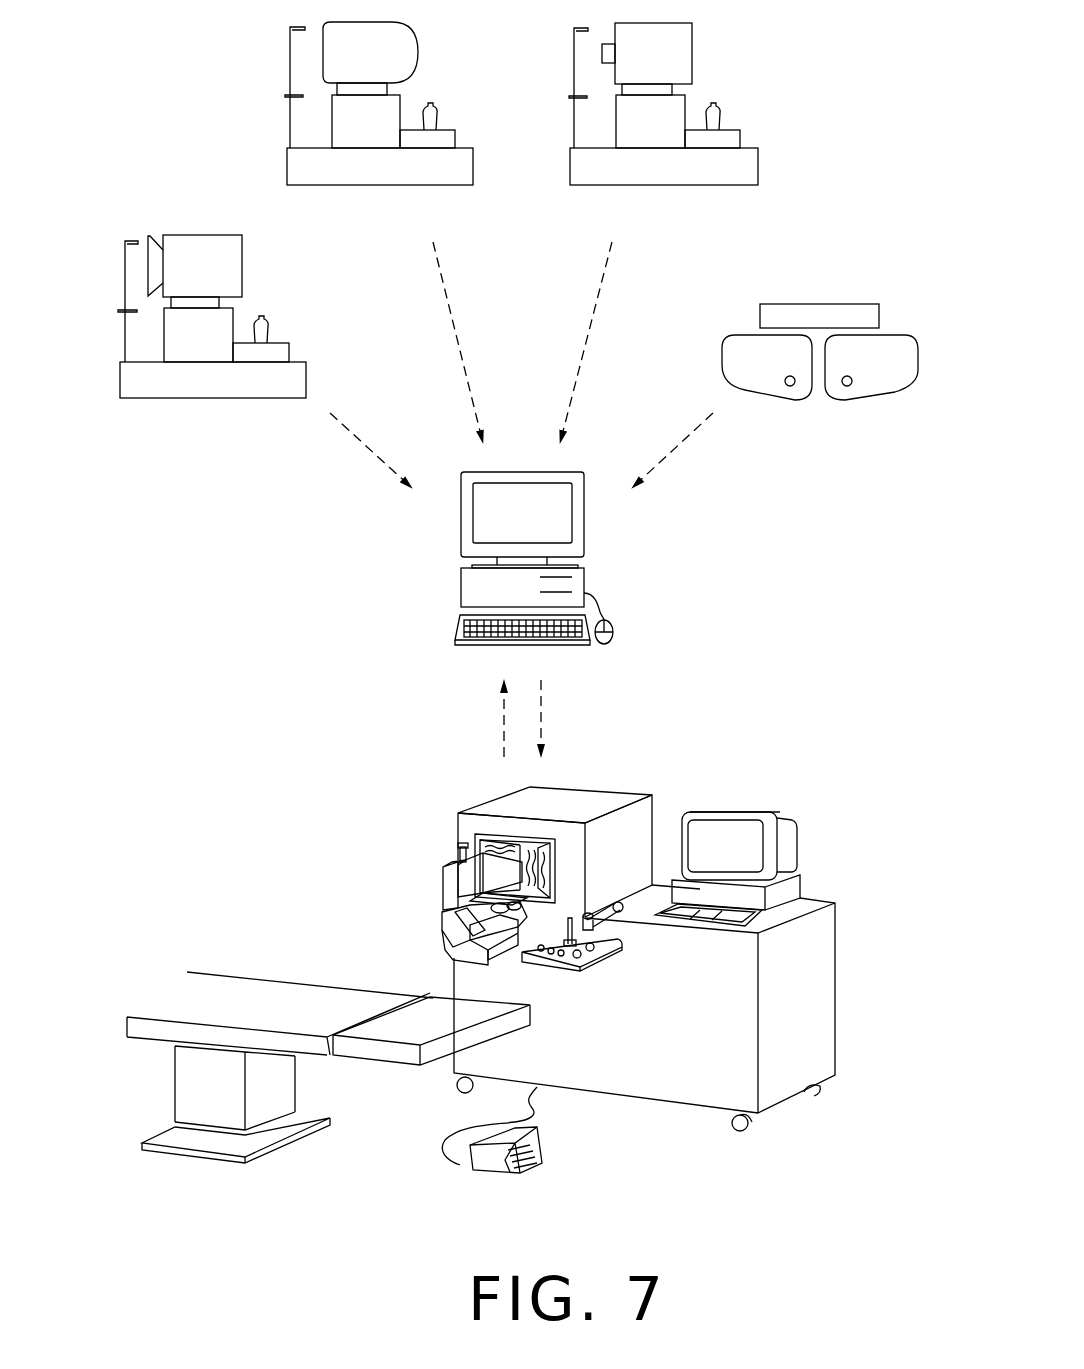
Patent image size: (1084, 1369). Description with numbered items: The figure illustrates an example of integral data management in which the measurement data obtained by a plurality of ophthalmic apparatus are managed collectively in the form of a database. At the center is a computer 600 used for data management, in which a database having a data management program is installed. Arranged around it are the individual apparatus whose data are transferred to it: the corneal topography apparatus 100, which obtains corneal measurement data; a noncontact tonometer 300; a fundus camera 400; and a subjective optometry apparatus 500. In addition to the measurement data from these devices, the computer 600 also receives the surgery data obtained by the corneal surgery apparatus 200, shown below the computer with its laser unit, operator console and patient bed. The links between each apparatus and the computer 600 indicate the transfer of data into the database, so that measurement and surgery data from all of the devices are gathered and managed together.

The corneal topography apparatus 100 is at (232, 406).
The corneal surgery apparatus 200 is at (433, 834).
The noncontact tonometer 300 is at (245, 120).
The fundus camera 400 is at (770, 97).
The subjective optometry apparatus 500 is at (848, 296).
The computer 600 is at (637, 546).